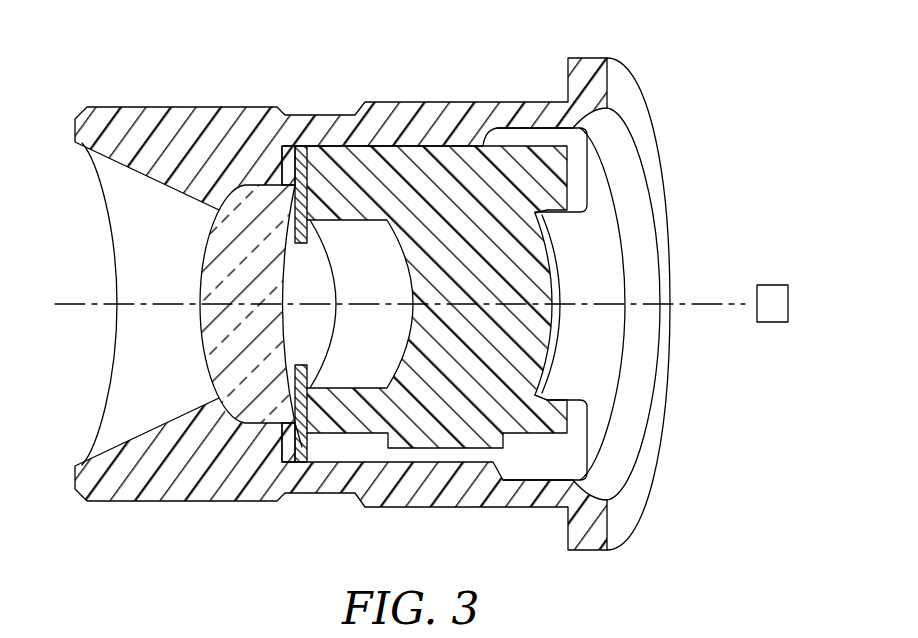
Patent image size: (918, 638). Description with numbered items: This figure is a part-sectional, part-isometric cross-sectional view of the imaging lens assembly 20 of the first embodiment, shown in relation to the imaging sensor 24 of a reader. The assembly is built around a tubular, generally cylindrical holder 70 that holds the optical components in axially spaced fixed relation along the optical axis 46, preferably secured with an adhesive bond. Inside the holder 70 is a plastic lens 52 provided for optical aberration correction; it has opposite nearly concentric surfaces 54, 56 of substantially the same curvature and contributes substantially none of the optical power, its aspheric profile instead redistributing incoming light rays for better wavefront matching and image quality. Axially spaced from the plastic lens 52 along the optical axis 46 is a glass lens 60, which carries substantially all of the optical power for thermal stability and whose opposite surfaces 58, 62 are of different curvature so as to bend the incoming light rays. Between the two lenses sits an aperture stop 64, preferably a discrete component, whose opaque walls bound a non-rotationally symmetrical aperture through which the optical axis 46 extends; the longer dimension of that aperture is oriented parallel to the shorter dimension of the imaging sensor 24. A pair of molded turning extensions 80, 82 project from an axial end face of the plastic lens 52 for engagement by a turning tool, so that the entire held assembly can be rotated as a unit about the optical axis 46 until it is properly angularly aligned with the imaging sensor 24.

The imaging lens assembly 20 is at (256, 63).
The imaging sensor 24 is at (773, 285).
The optical axis 46 is at (708, 302).
The plastic lens 52 is at (467, 432).
The surface of the plastic lens 54 is at (560, 335).
The surface of the plastic lens 56 is at (412, 345).
The surface of the glass lens 58 is at (302, 465).
The glass lens 60 is at (217, 332).
The surface of the glass lens 62 is at (200, 287).
The aperture stop 64 is at (301, 145).
The holder 70 is at (172, 116).
The turning extension 80 is at (548, 185).
The turning extension 82 is at (552, 420).